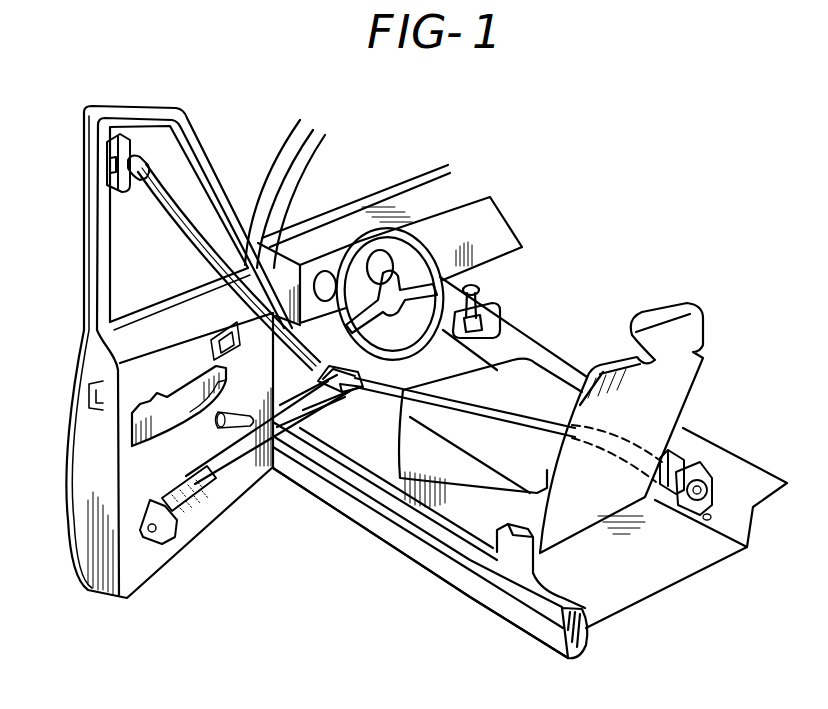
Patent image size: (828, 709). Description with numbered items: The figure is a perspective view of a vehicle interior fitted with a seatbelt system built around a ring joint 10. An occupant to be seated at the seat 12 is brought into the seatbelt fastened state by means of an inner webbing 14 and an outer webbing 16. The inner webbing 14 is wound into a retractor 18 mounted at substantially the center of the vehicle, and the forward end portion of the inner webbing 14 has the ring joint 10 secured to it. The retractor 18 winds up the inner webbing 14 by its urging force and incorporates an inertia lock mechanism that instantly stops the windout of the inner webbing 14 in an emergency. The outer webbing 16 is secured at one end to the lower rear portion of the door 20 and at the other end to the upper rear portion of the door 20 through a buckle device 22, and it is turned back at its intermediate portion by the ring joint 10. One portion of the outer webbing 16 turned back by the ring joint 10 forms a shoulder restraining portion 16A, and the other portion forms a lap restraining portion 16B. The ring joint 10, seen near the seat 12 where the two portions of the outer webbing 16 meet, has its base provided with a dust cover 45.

The ring joint 10 is at (336, 421).
The seat 12 is at (402, 432).
The inner webbing 14 is at (495, 413).
The outer webbing 16 is at (216, 488).
The shoulder restraining portion 16A is at (202, 254).
The lap restraining portion 16B is at (198, 464).
The retractor 18 is at (683, 513).
The door 20 is at (243, 483).
The buckle device 22 is at (103, 125).
The dust cover 45 is at (316, 365).